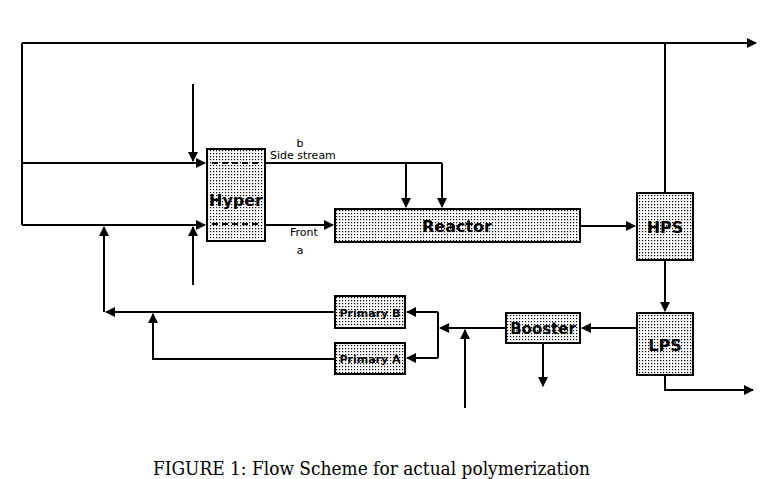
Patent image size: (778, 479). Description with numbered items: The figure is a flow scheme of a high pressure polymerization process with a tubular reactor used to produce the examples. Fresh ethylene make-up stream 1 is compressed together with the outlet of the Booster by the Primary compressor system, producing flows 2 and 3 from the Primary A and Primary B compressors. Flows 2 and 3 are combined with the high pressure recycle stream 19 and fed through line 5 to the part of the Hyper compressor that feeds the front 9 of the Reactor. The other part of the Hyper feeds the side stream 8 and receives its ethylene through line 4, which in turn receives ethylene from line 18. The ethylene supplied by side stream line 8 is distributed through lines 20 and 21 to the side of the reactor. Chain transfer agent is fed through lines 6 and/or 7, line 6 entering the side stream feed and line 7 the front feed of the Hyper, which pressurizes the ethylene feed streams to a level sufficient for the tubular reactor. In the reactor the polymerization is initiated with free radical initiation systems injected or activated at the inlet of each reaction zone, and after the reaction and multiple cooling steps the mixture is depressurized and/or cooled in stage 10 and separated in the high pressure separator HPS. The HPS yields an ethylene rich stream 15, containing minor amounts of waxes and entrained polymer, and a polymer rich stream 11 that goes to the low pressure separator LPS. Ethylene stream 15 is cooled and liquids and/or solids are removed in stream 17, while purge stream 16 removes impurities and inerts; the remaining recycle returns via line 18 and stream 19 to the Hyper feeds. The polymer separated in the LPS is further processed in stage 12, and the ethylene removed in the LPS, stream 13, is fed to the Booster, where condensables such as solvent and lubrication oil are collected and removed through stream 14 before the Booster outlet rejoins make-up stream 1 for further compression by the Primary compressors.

The fresh ethylene make-up stream 1 is at (473, 368).
The primary compressor outlet flow 2 is at (244, 336).
The primary compressor outlet flow 3 is at (219, 269).
The ethylene feed line to side stream Hyper part 4 is at (113, 150).
The feed line to front Hyper part 5 is at (113, 212).
The CTA feed line 6 is at (206, 122).
The CTA feed line 7 is at (204, 256).
The side stream line 8 is at (353, 150).
The reactor front feed 9 is at (299, 209).
The depressurization and/or cooling stage 10 is at (607, 212).
The polymer rich stream 11 is at (679, 285).
The polymer processing stage 12 is at (709, 397).
The removed ethylene stream 13 is at (609, 313).
The condensables removal stream 14 is at (558, 370).
The ethylene rich stream 15 is at (680, 118).
The purge stream 16 is at (710, 31).
The liquids and solids removal stream 17 is at (343, 29).
The recycle ethylene line 18 is at (38, 134).
The high pressure recycle stream 19 is at (40, 194).
The side stream distribution line 20 is at (386, 185).
The side stream distribution line 21 is at (458, 185).